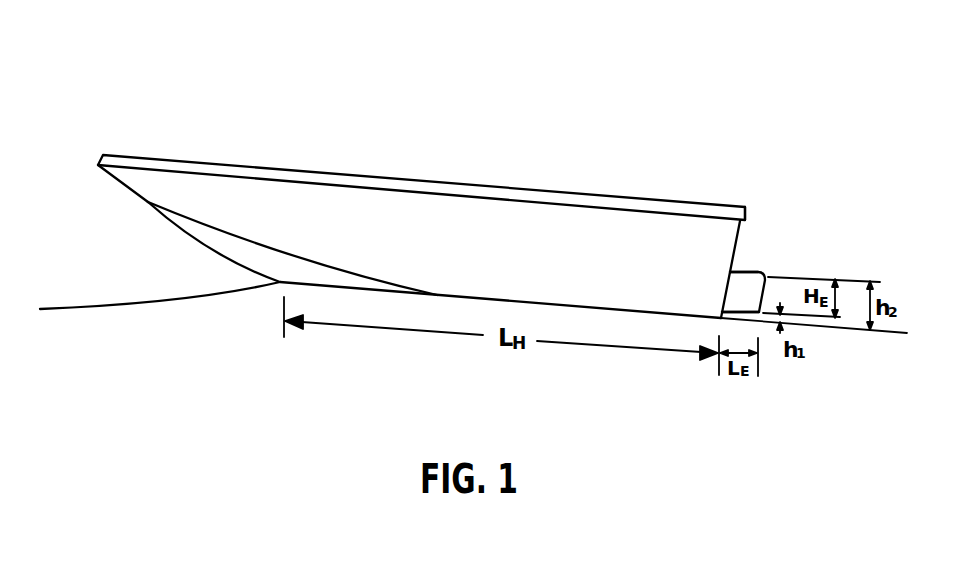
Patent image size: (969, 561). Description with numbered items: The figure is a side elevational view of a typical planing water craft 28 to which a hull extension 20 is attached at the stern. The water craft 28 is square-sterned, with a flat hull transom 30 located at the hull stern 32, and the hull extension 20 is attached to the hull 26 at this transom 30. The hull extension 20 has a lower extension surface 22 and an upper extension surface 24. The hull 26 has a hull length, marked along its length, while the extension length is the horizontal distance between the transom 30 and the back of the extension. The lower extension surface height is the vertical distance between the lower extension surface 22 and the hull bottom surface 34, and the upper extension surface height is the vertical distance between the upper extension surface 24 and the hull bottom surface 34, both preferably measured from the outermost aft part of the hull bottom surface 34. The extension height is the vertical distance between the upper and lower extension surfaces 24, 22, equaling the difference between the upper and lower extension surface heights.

The hull extension 20 is at (752, 284).
The lower extension surface 22 is at (744, 312).
The upper extension surface 24 is at (742, 267).
The hull 26 is at (313, 198).
The water craft 28 is at (210, 152).
The hull transom 30 is at (740, 247).
The hull stern 32 is at (742, 231).
The hull bottom surface 34 is at (325, 288).